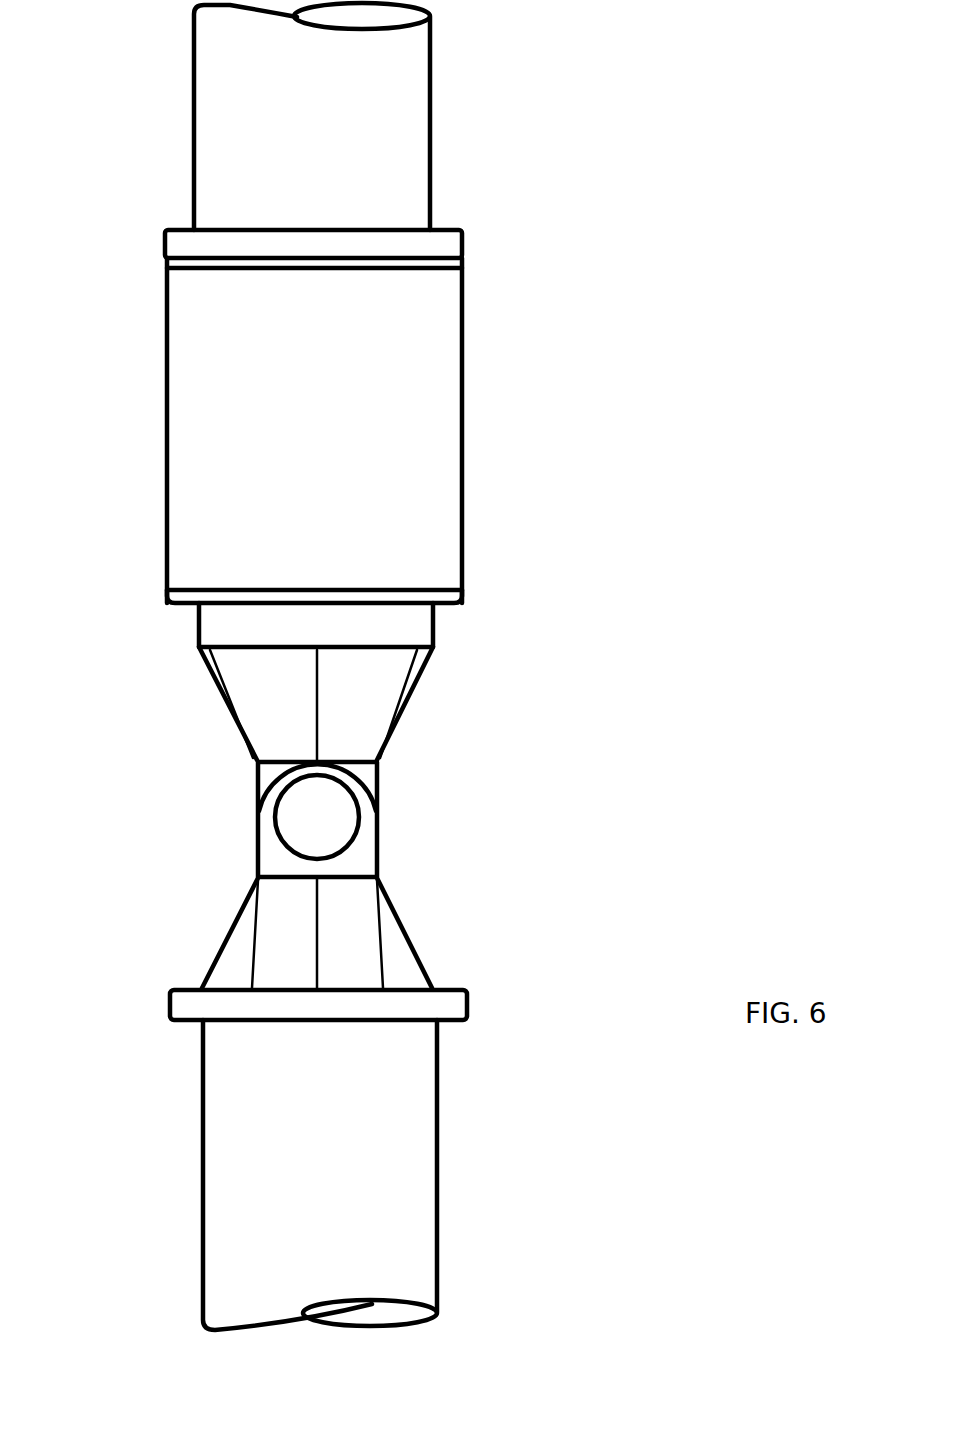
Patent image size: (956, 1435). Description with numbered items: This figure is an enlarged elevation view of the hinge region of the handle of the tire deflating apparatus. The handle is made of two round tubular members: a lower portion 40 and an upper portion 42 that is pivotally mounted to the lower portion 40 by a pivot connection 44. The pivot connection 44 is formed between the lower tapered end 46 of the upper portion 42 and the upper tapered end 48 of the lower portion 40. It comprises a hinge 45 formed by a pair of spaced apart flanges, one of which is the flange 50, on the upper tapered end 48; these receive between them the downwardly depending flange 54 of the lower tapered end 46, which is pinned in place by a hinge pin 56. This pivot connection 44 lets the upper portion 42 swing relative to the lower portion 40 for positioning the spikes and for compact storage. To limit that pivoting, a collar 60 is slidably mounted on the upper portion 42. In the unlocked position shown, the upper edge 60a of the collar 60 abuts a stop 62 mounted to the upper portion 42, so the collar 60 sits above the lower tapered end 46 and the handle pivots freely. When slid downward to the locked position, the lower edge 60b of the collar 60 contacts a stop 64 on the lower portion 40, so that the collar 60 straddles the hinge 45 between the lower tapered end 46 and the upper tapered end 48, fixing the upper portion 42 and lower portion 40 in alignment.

The lower portion 40 is at (267, 1232).
The upper portion 42 is at (317, 148).
The pivot connection 44 is at (586, 711).
The hinge 45 is at (373, 692).
The lower tapered end 46 is at (425, 670).
The upper tapered end 48 is at (423, 950).
The flange 50 is at (372, 833).
The downwardly depending flange 54 is at (380, 772).
The hinge pin 56 is at (332, 820).
The collar 60 is at (373, 470).
The upper edge 60a is at (190, 266).
The lower edge 60b is at (455, 603).
The stop 62 is at (464, 238).
The stop 64 is at (472, 1008).